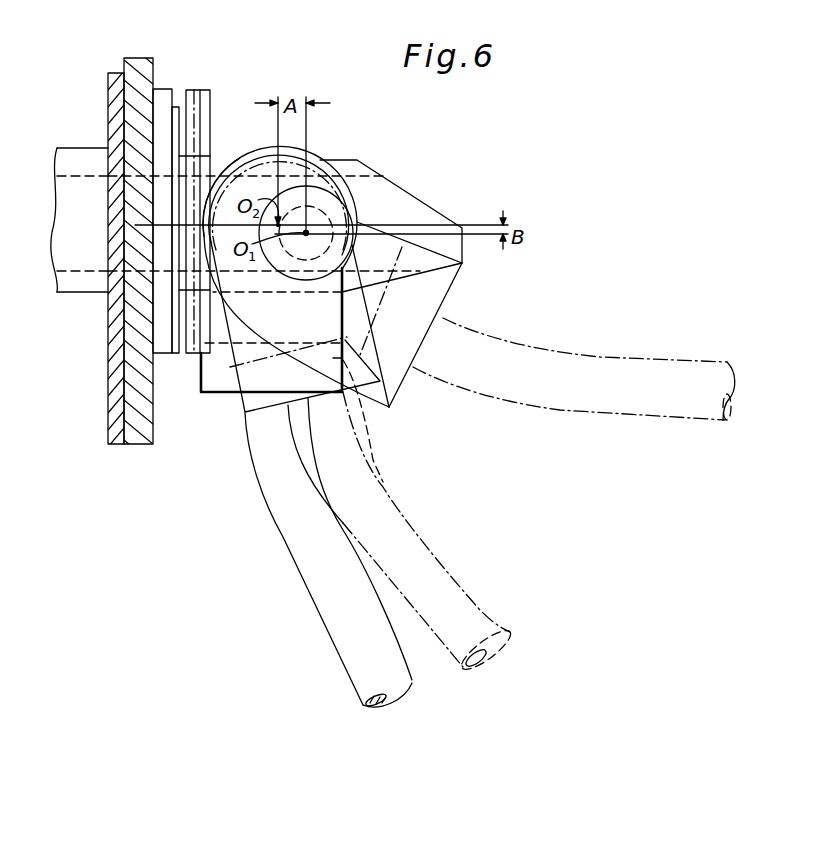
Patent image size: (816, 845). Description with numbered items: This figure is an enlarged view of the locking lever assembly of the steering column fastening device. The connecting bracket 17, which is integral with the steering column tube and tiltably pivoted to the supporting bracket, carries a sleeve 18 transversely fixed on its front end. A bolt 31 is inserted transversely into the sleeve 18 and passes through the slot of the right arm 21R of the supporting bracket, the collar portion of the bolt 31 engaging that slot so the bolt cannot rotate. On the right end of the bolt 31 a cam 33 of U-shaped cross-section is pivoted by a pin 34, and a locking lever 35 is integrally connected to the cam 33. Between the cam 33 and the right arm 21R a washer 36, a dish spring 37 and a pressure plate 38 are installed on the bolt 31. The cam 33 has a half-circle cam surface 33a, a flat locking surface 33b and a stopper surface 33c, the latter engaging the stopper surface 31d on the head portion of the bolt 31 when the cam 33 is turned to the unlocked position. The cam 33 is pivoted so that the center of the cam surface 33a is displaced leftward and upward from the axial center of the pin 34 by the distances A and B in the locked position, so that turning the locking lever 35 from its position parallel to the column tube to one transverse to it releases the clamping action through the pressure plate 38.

The connecting bracket 17 is at (113, 357).
The sleeve 18 is at (72, 153).
The right arm of supporting bracket 21R is at (133, 432).
The bolt 31 is at (398, 197).
The stopper surface of bolt 31d is at (423, 279).
The cam 33 is at (220, 383).
The cam surface 33a is at (240, 158).
The flat locking surface 33b is at (202, 308).
The stopper surface of cam 33c is at (360, 397).
The pin 34 is at (332, 200).
The locking lever 35 is at (317, 582).
The washer 36 is at (163, 95).
The dish spring 37 is at (182, 305).
The pressure plate 38 is at (190, 95).